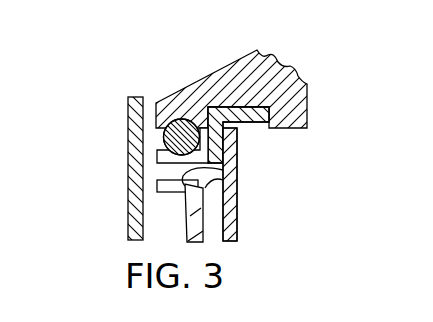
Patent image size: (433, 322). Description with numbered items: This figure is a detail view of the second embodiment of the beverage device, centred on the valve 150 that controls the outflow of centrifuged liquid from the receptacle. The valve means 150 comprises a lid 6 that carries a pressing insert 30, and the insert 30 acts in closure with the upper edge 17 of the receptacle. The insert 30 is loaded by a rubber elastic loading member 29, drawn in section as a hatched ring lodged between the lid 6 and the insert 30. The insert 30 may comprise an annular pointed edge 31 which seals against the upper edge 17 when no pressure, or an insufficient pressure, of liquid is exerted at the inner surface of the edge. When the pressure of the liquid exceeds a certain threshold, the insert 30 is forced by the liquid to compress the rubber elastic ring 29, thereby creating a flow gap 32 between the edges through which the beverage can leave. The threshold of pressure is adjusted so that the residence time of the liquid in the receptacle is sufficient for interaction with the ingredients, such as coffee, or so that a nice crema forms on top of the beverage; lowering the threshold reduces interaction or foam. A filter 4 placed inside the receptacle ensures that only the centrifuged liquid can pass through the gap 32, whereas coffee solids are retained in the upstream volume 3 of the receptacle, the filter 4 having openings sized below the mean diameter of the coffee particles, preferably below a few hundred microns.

The lid 6 is at (196, 77).
The filter 4 is at (238, 218).
The rubber elastic loading member 29 is at (164, 138).
The pressing insert 30 is at (157, 160).
The upper edge of the receptacle 17 is at (157, 187).
The flow gap 32 is at (186, 198).
The annular pointed edge 31 is at (238, 169).
The valve 150 is at (90, 123).
The upstream volume 3 is at (302, 200).